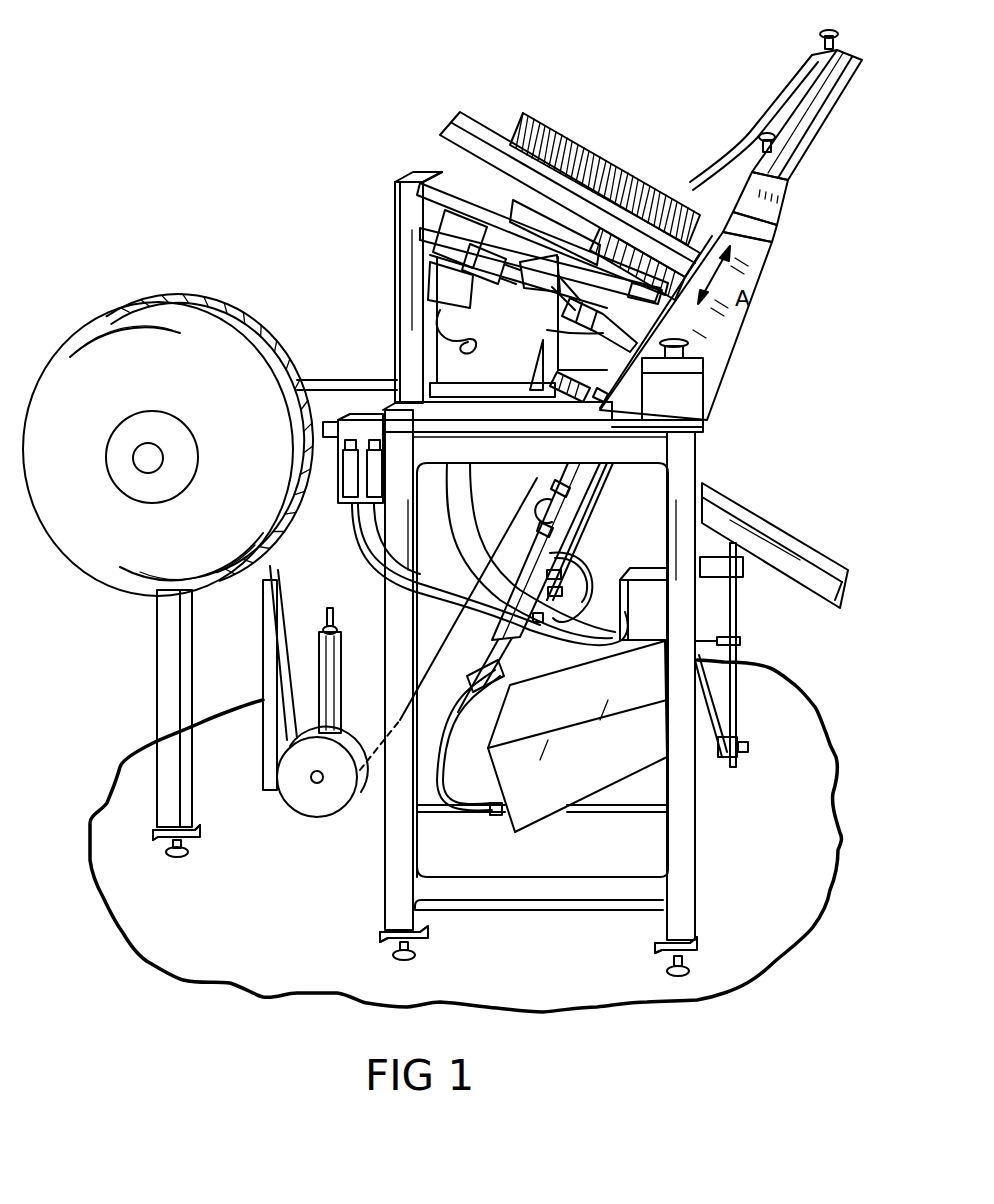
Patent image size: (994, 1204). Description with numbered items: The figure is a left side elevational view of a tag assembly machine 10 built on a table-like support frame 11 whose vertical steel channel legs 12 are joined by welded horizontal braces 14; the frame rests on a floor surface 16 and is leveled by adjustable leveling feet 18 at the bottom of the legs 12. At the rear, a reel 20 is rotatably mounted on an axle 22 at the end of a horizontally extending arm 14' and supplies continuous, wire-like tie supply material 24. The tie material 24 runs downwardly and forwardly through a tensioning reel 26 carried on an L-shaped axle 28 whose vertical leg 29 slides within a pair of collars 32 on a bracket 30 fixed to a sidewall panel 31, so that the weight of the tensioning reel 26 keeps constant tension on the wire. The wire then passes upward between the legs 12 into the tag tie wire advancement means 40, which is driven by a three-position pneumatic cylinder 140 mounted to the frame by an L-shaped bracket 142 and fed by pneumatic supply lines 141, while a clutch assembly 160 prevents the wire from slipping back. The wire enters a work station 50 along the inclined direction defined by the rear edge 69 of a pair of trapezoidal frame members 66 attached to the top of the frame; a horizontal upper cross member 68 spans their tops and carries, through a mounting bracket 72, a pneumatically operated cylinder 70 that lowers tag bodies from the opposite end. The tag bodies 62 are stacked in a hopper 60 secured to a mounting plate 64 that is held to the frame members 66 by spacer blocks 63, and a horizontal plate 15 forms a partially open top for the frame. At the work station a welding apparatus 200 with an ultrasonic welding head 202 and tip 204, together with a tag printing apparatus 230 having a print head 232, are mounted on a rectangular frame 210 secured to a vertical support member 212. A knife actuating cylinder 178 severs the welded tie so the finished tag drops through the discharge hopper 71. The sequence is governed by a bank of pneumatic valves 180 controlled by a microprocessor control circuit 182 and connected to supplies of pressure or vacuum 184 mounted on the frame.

The tag assembly machine 10 is at (310, 230).
The support frame 11 is at (705, 800).
The legs 12 is at (157, 628).
The braces 14 is at (567, 676).
The arm 14' is at (347, 360).
The plate 15 is at (698, 428).
The floor surface 16 is at (764, 911).
The leveling feet 18 is at (184, 860).
The reel 20 is at (105, 300).
The axle 22 is at (133, 460).
The tie supply material 24 is at (280, 573).
The tensioning reel 26 is at (283, 798).
The L-shaped axle 28 is at (317, 783).
The vertical leg 29 is at (327, 622).
The bracket 30 is at (341, 646).
The sidewall panel 31 is at (370, 688).
The collars 32 is at (323, 633).
The tag tie wire advancement means 40 is at (538, 484).
The work station 50 is at (690, 331).
The hopper 60 is at (453, 127).
The tag bodies 62 is at (530, 120).
The spacer blocks 63 is at (712, 165).
The mounting plate 64 is at (673, 193).
The frame members 66 is at (757, 278).
The upper cross member 68 is at (775, 236).
The rear edge 69 is at (732, 210).
The pneumatically operated cylinder 70 is at (820, 142).
The discharge hopper 71 is at (763, 527).
The mounting bracket 72 is at (782, 214).
The pneumatic cylinder 140 is at (590, 502).
The pneumatic supply lines 141 is at (588, 575).
The L-shaped bracket 142 is at (486, 686).
The clutch assembly 160 is at (600, 494).
The knife actuating cylinder 178 is at (570, 397).
The pneumatic valves 180 is at (347, 480).
The microprocessor control circuit 182 is at (543, 745).
The supplies of pressure or vacuum 184 is at (647, 567).
The welding apparatus 200 is at (574, 296).
The ultrasonic welding head 202 is at (547, 330).
The tip 204 is at (637, 343).
The frame 210 is at (450, 178).
The vertical support member 212 is at (395, 216).
The tag printing apparatus 230 is at (513, 206).
The print head 232 is at (622, 280).